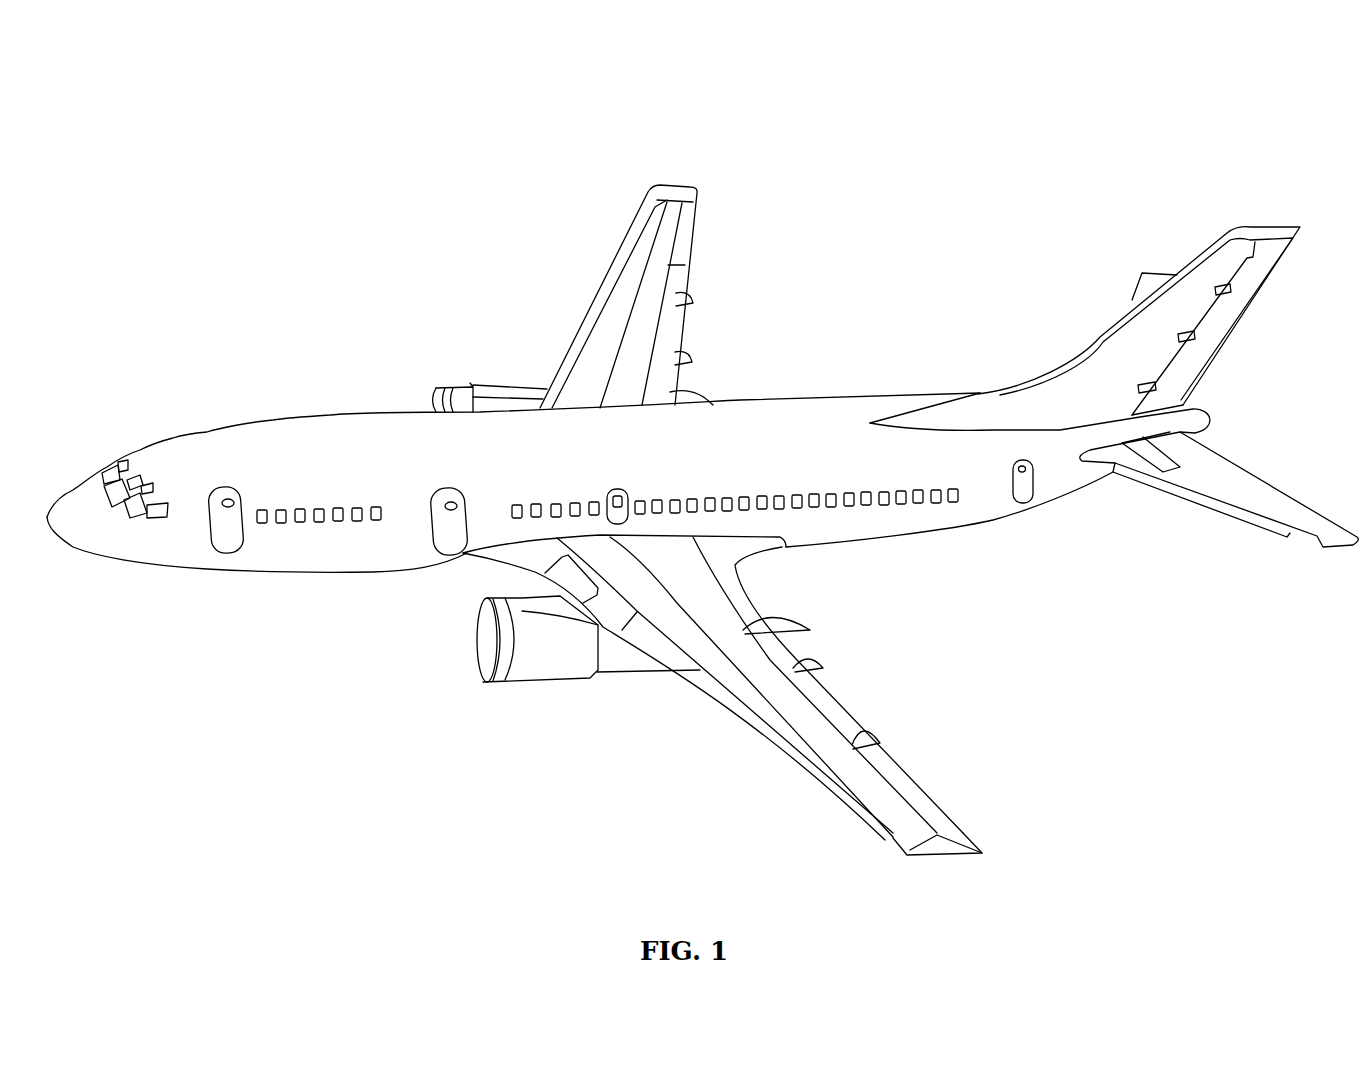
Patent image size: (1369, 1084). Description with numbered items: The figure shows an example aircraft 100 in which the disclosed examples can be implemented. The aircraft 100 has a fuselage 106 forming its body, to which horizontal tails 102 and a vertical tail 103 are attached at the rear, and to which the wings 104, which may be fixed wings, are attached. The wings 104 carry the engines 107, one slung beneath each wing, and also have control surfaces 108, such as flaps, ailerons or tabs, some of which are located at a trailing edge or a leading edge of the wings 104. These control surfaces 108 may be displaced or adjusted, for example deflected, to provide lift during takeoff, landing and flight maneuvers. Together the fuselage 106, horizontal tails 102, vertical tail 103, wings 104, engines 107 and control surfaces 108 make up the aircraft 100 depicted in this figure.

The aircraft 100 is at (246, 293).
The horizontal tails 102 is at (1152, 290).
The vertical tail 103 is at (1265, 245).
The wings 104 is at (573, 338).
The fuselage 106 is at (162, 474).
The engines 107 is at (465, 390).
The control surfaces 108 is at (668, 303).